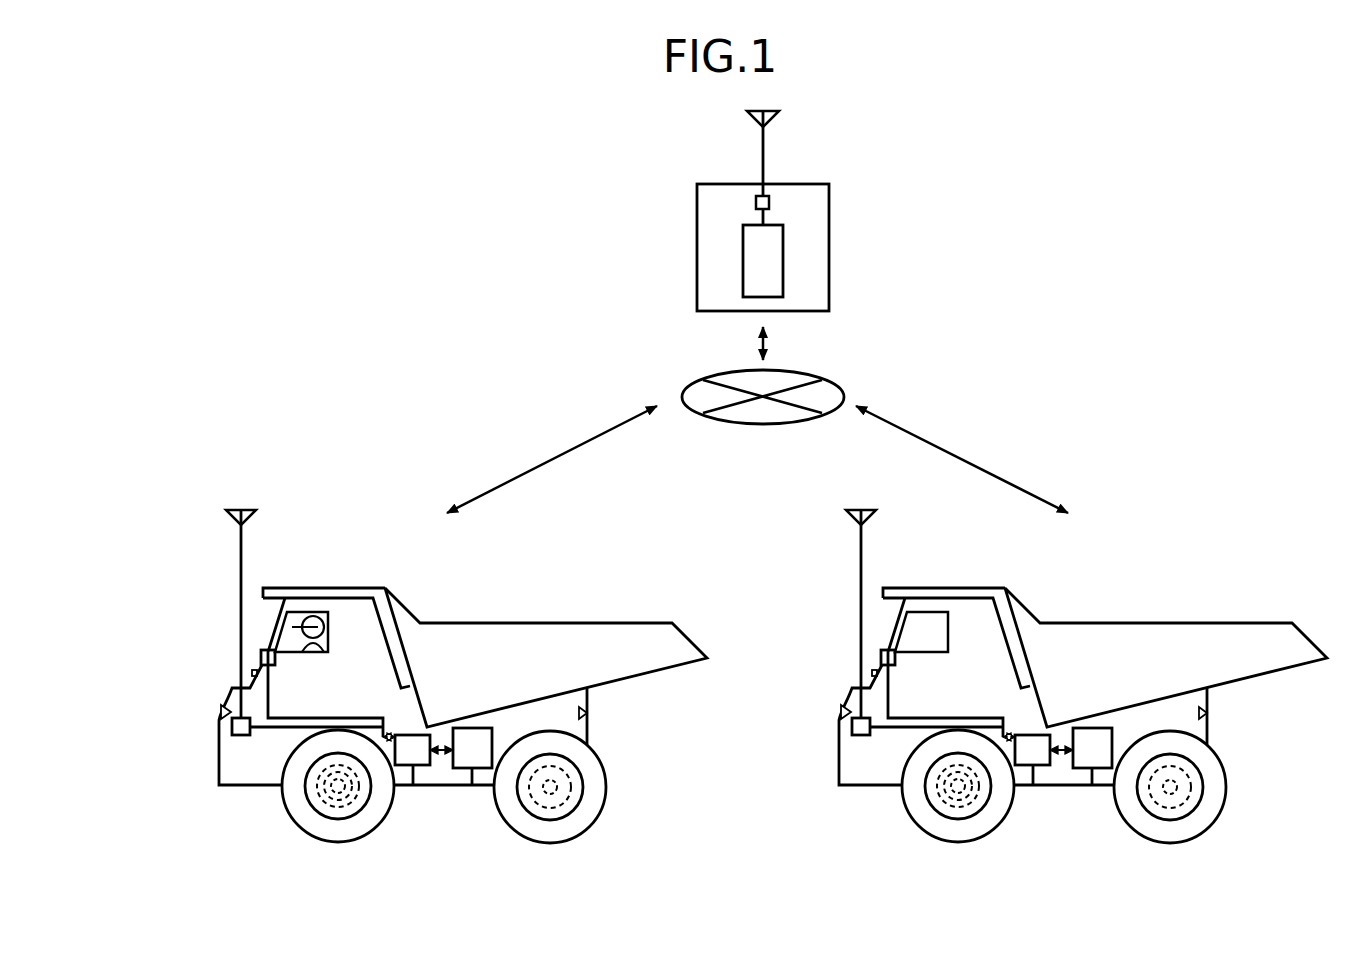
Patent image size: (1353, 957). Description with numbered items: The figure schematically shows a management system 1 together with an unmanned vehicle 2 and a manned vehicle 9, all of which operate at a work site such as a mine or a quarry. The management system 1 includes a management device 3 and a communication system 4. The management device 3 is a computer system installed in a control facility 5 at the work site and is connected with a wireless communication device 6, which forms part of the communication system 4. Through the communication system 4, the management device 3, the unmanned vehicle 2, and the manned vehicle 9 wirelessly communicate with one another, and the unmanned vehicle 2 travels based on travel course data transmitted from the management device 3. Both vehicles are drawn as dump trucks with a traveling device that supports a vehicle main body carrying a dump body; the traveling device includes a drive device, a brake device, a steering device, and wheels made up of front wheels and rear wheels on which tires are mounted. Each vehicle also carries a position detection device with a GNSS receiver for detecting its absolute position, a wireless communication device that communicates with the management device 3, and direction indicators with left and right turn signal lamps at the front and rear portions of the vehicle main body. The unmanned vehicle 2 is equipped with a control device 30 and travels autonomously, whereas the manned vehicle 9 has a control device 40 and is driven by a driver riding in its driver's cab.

The management system 1 is at (1048, 151).
The unmanned vehicle 2 is at (1026, 699).
The management device 3 is at (743, 255).
The communication system 4 is at (826, 381).
The control facility 5 is at (746, 211).
The wireless communication device 6 is at (756, 203).
The manned vehicle 9 is at (406, 699).
The control device 30 is at (1033, 785).
The control device 40 is at (413, 785).